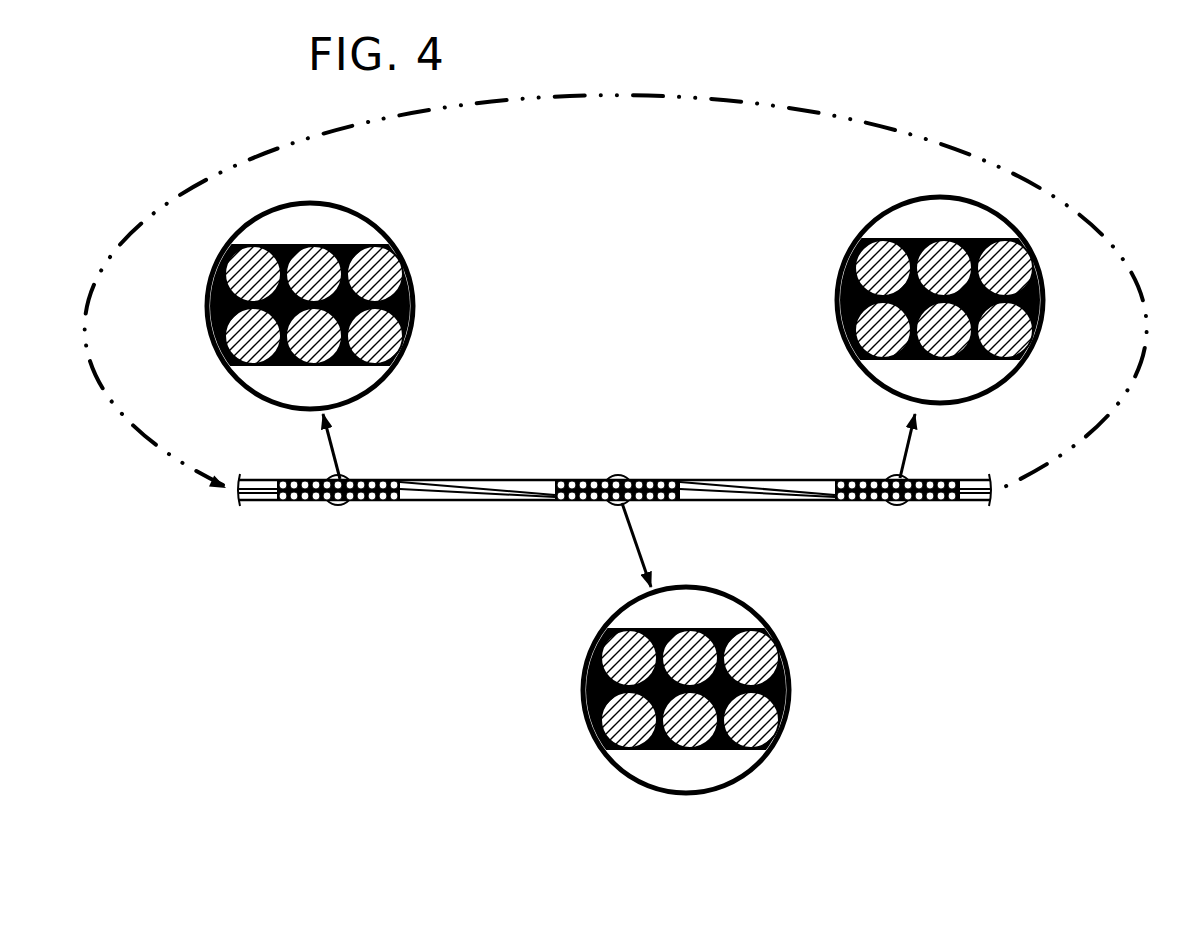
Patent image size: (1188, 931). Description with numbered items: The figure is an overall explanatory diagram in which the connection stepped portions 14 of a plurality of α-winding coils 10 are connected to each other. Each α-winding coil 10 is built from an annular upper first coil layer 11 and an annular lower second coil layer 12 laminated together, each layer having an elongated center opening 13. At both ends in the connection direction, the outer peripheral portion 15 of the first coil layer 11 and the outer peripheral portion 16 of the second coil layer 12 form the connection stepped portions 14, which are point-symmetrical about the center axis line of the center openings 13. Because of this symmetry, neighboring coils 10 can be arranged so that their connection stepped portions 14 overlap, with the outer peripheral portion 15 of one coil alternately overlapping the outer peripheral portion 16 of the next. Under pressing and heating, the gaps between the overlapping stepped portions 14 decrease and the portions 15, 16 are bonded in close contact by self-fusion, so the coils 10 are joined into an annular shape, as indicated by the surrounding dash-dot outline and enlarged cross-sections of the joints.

The α-winding coil 10 is at (678, 396).
The first coil layer 11 is at (370, 478).
The second coil layer 12 is at (378, 504).
The center opening 13 is at (412, 500).
The connection stepped portion 14 is at (278, 243).
The outer peripheral portion 15 is at (310, 262).
The outer peripheral portion 16 is at (318, 343).